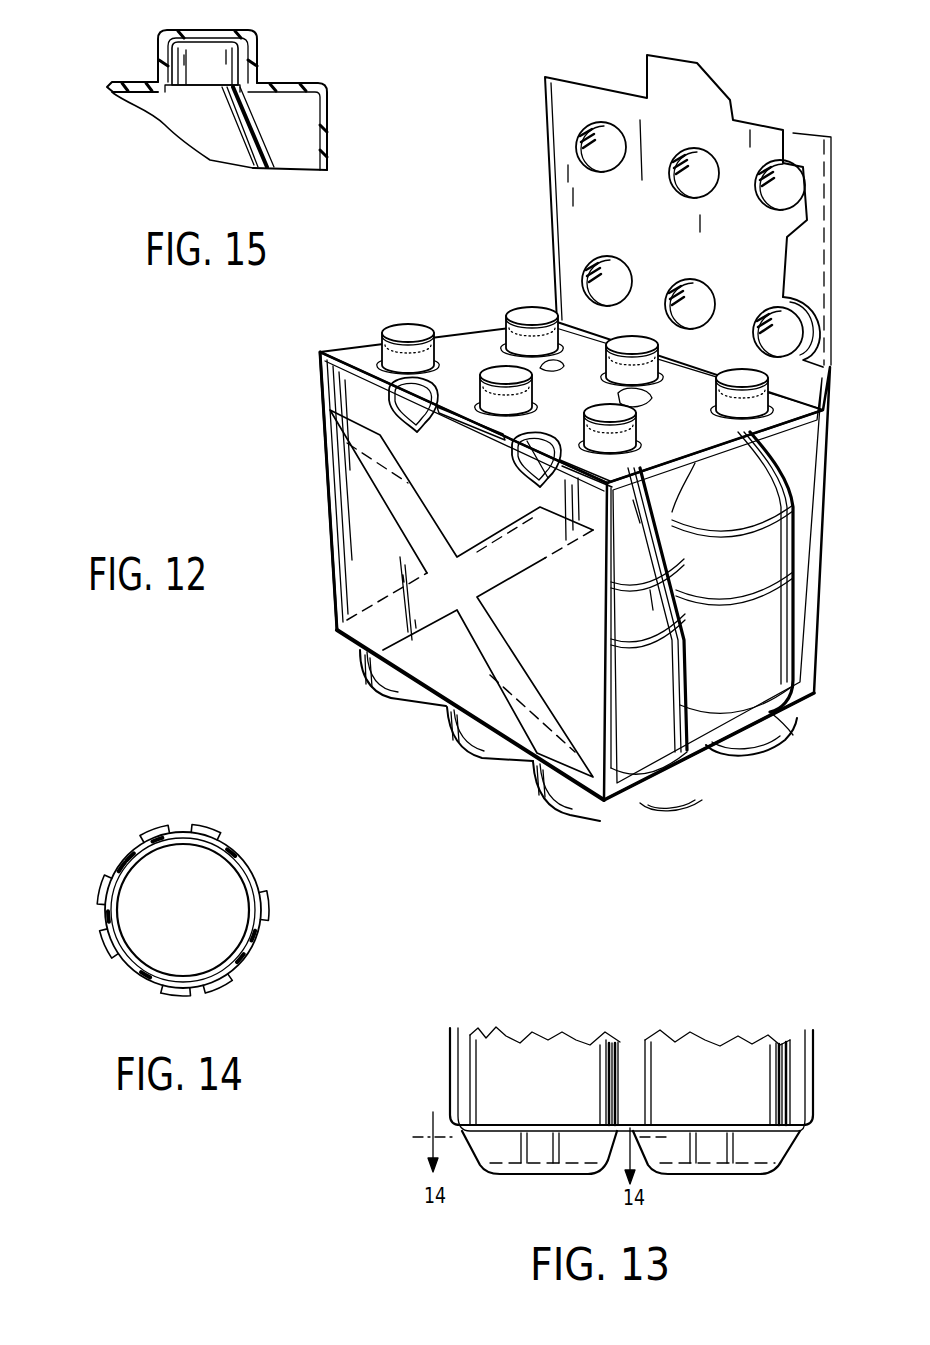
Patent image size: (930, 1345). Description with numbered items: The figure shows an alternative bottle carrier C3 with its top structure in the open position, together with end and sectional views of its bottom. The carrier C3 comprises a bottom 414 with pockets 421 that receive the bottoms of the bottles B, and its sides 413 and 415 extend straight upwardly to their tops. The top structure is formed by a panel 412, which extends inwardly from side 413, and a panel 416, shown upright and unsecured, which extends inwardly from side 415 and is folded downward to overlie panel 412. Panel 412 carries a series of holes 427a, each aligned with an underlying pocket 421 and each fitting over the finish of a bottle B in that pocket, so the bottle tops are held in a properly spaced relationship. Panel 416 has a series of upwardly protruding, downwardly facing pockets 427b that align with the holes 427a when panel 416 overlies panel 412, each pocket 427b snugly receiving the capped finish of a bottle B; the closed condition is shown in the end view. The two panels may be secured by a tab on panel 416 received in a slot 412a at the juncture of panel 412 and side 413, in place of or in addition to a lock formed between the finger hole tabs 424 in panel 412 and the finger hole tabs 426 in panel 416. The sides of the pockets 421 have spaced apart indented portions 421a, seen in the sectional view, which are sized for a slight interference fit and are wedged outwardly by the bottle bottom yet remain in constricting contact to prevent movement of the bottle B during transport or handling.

In FIG. 15, the panel 412 is at (294, 82).
In FIG. 12, the panel 412 is at (346, 352).
In FIG. 12, the slot 412a is at (480, 420).
In FIG. 12, the side 413 is at (330, 520).
In FIG. 12, the bottom 414 is at (712, 762).
In FIG. 15, the side 415 is at (329, 158).
In FIG. 12, the side 415 is at (822, 577).
In FIG. 15, the panel 416 is at (130, 82).
In FIG. 12, the panel 416 is at (705, 78).
In FIG. 12, the pockets 421 is at (540, 775).
In FIG. 14, the pockets 421 is at (265, 883).
In FIG. 13, the pockets 421 is at (510, 1168).
In FIG. 14, the indented portions 421a is at (100, 900).
In FIG. 13, the indented portions 421a is at (528, 1145).
In FIG. 12, the finger hole tabs 424 is at (582, 364).
In FIG. 12, the finger hole tabs 426 is at (740, 228).
In FIG. 15, the holes 427a is at (143, 97).
In FIG. 12, the holes 427a is at (482, 392).
In FIG. 15, the pockets 427b is at (243, 31).
In FIG. 12, the pockets 427b is at (800, 315).
In FIG. 15, the bottle B is at (274, 132).
In FIG. 12, the bottle B is at (800, 657).
In FIG. 14, the bottle B is at (255, 853).
In FIG. 12, the carrier C3 is at (836, 507).